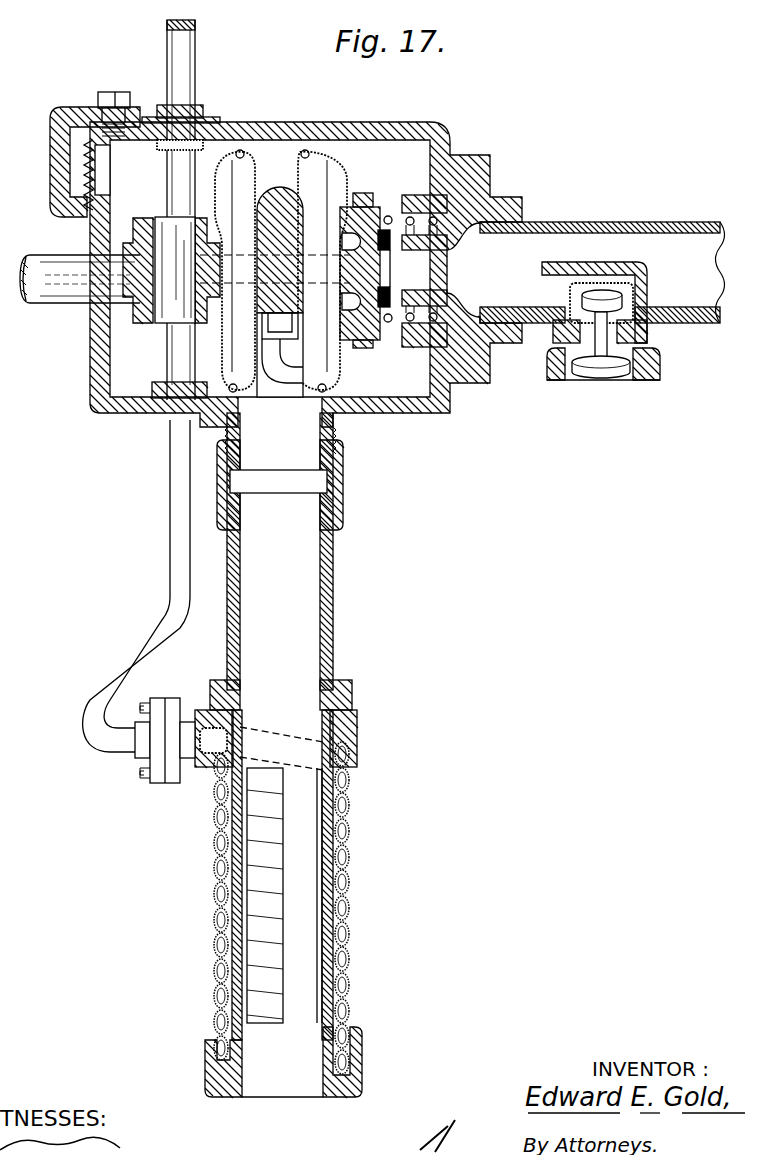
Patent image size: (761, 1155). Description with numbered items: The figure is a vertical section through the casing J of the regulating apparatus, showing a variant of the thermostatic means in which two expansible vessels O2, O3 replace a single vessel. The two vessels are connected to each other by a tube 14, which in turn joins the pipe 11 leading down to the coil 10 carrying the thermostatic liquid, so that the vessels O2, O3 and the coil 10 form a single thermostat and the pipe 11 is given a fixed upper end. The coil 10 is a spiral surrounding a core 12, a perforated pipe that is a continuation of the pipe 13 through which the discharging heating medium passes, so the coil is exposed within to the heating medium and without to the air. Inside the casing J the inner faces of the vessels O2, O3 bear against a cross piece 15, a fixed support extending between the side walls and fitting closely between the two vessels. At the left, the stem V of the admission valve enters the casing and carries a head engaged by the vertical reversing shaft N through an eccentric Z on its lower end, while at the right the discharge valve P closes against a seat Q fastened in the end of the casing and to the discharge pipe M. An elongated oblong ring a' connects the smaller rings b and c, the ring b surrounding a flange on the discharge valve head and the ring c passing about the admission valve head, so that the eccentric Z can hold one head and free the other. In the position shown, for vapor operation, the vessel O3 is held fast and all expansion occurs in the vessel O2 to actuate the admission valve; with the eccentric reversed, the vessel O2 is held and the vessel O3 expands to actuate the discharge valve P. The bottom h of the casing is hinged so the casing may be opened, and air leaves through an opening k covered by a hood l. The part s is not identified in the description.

The casing J is at (303, 257).
The hood l is at (72, 120).
The opening k is at (108, 170).
The vertical shaft N is at (188, 60).
The ring c is at (147, 222).
The eccentric Z is at (170, 318).
The stem V is at (50, 266).
The expansible vessel O2 is at (263, 160).
The expansible vessel O3 is at (298, 160).
The cross piece 15 is at (276, 202).
The tube 14 is at (262, 336).
The oblong ring a' is at (275, 266).
The ring b is at (367, 203).
The discharge valve P is at (392, 274).
The seat Q is at (425, 252).
The discharge pipe M is at (602, 272).
The screw s is at (601, 335).
The bottom h is at (383, 413).
The pipe 11 is at (176, 502).
The pipe 13 is at (292, 612).
The coil 10 is at (216, 854).
The core 12 is at (300, 864).